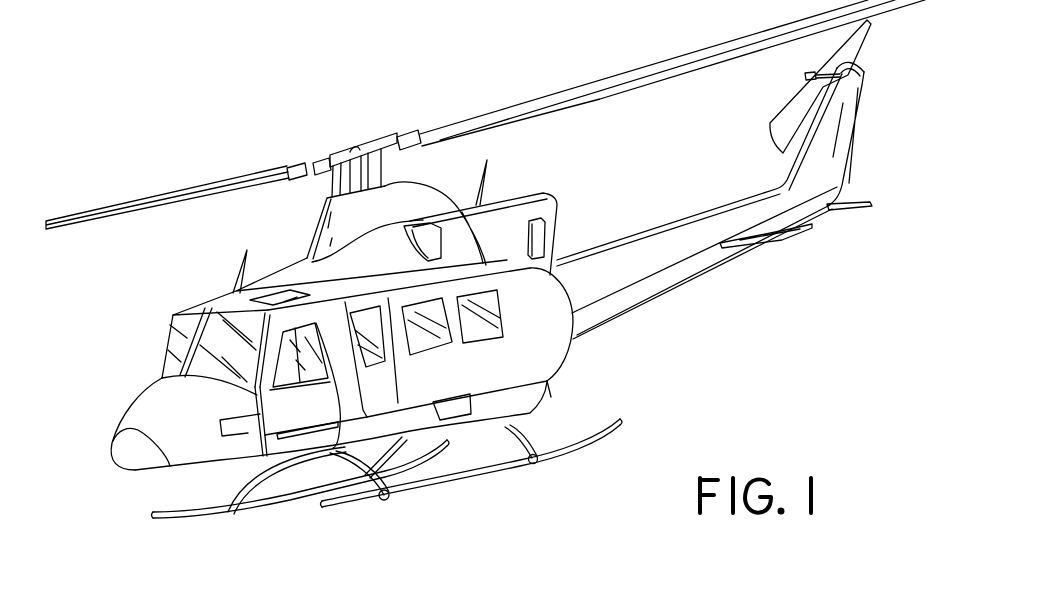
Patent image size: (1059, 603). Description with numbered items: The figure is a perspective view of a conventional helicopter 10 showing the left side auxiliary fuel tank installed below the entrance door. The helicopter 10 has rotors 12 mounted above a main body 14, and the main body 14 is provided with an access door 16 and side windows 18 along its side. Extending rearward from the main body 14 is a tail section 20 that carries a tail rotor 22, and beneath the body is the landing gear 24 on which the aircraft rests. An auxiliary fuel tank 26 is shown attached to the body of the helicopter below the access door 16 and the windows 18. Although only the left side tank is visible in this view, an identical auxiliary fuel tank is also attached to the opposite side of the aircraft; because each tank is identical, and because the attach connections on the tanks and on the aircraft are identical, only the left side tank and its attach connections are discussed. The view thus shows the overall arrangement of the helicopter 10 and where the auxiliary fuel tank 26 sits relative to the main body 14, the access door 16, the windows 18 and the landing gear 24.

The helicopter 10 is at (368, 129).
The rotors 12 is at (550, 95).
The main body 14 is at (543, 346).
The access door 16 is at (392, 390).
The side windows 18 is at (486, 301).
The tail section 20 is at (696, 268).
The tail rotor 22 is at (775, 120).
The landing gear 24 is at (583, 445).
The auxiliary fuel tank 26 is at (557, 383).